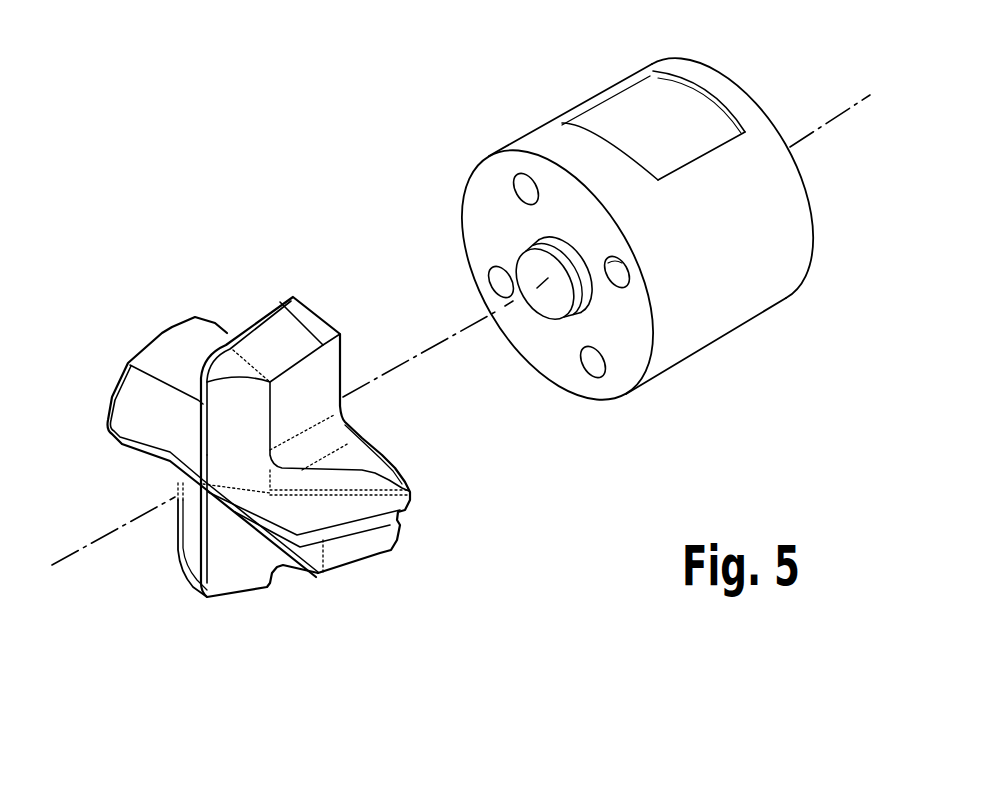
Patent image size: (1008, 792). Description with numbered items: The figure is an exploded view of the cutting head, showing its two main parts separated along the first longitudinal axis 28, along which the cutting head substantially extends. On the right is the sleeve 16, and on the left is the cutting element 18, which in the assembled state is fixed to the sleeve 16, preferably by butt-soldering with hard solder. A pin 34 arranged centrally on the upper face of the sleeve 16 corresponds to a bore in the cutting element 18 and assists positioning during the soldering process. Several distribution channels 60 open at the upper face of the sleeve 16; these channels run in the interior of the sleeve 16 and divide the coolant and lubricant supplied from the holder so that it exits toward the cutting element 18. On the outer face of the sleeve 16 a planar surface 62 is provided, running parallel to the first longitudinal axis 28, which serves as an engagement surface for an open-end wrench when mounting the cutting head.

The sleeve 16 is at (740, 307).
The cutting element 18 is at (270, 337).
The first longitudinal axis 28 is at (73, 562).
The pin 34 is at (540, 310).
The distribution channels 60 is at (522, 188).
The planar surface 62 is at (650, 100).